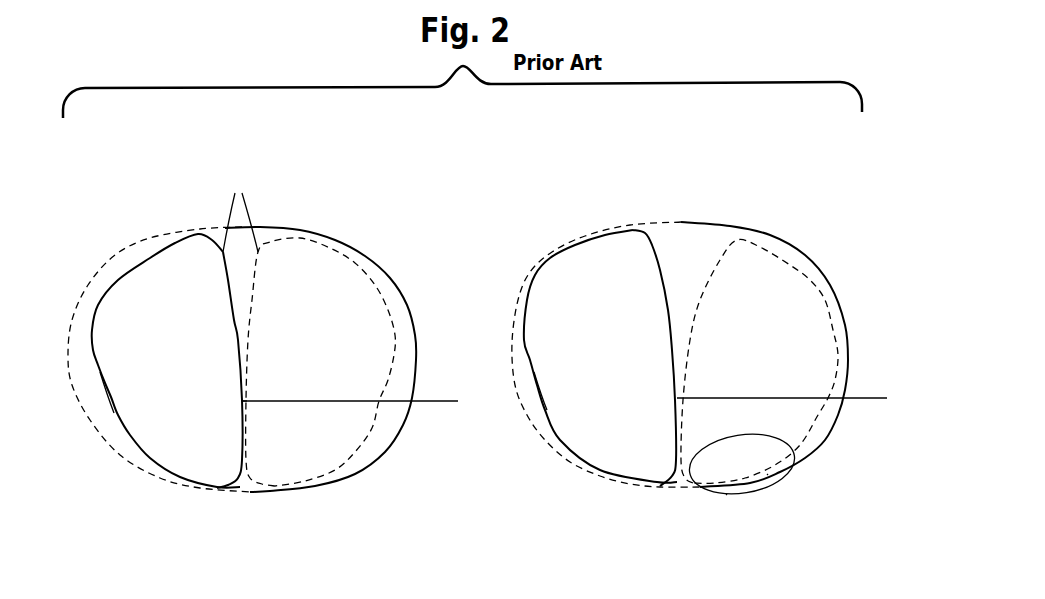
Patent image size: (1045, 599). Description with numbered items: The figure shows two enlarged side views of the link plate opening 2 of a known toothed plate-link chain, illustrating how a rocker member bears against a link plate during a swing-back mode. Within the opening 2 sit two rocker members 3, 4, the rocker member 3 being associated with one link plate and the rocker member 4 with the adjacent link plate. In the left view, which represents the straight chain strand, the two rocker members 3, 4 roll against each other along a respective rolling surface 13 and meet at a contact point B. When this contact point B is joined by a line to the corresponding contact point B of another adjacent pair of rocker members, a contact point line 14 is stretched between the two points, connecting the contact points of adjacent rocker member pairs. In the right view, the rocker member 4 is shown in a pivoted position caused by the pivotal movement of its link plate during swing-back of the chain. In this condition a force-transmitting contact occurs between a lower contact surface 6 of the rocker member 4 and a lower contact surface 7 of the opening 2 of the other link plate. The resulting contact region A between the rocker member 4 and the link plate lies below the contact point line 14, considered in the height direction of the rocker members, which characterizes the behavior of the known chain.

The link plate opening 2 is at (787, 252).
The rocker member 3 is at (153, 293).
The rocker member 4 is at (300, 257).
The lower contact surface of rocker member 6 is at (795, 458).
The lower contact surface of opening 7 is at (768, 474).
The rolling surface 13 is at (240, 209).
The contact point line 14 is at (447, 404).
The contact region A is at (726, 494).
The contact point B is at (244, 400).